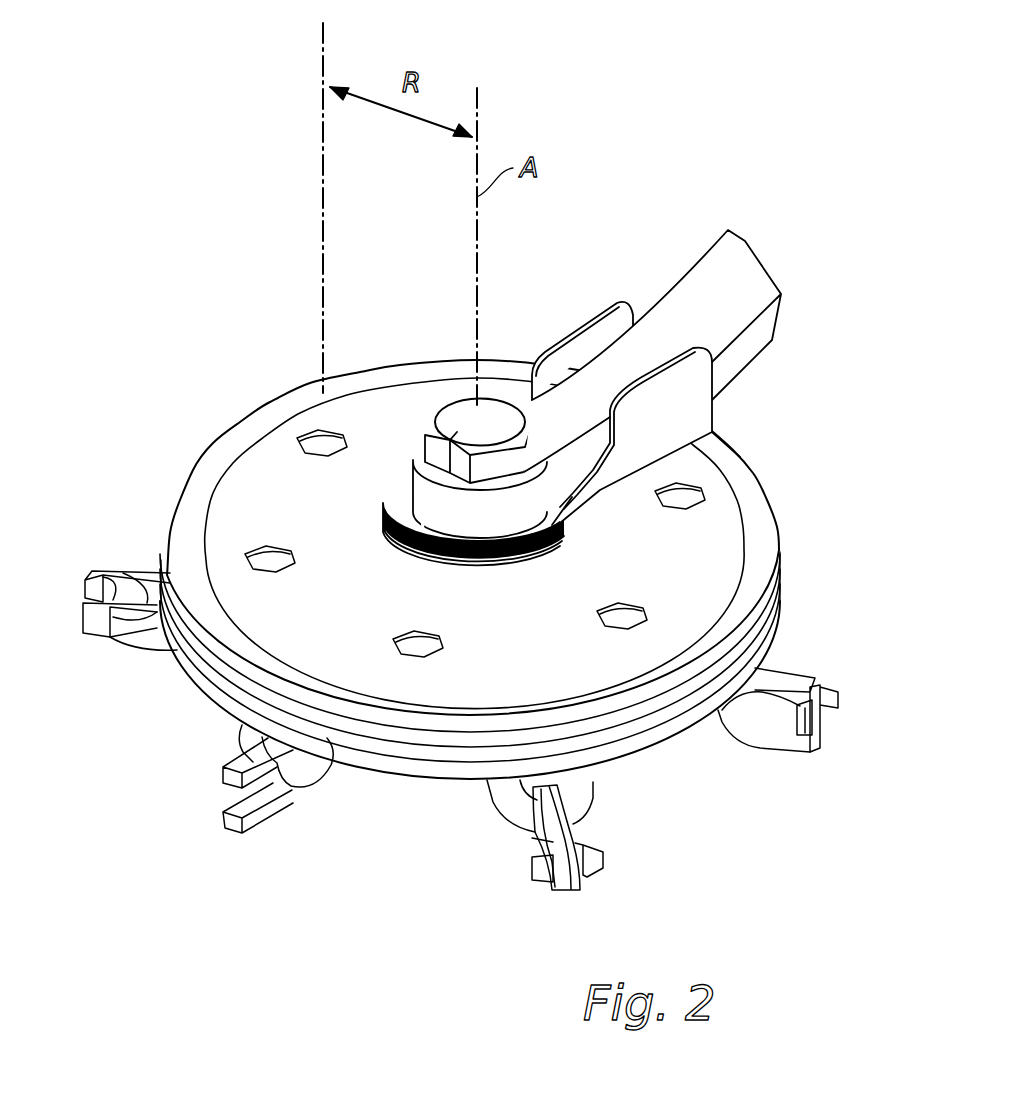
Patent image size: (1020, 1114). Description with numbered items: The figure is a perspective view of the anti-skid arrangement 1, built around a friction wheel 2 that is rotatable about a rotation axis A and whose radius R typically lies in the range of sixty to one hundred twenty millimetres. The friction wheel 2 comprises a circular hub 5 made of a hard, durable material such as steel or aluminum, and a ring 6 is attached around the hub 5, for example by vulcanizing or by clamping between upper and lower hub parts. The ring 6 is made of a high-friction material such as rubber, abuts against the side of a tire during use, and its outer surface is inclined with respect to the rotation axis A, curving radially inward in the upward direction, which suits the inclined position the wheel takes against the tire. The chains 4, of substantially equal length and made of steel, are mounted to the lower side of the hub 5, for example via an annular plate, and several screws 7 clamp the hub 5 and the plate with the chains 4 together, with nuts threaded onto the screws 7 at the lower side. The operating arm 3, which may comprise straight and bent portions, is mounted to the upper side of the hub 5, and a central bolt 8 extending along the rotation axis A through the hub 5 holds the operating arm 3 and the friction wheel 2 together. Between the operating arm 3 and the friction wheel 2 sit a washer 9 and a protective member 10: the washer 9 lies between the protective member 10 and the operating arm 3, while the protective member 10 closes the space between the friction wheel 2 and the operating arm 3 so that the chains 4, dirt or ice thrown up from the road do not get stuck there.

The anti-skid arrangement 1 is at (150, 260).
The friction wheel 2 is at (772, 470).
The operating arm 3 is at (700, 280).
The chains 4 is at (103, 573).
The hub 5 is at (248, 487).
The ring 6 is at (785, 572).
The screws 7 is at (307, 440).
The central bolt 8 is at (465, 407).
The washer 9 is at (395, 487).
The protective member 10 is at (583, 317).